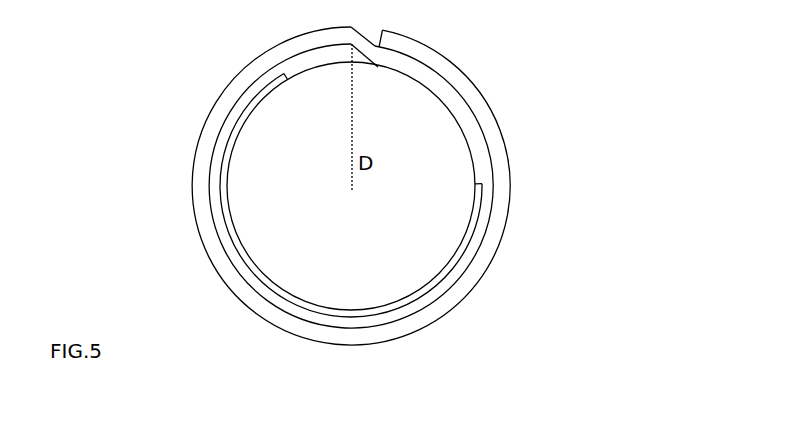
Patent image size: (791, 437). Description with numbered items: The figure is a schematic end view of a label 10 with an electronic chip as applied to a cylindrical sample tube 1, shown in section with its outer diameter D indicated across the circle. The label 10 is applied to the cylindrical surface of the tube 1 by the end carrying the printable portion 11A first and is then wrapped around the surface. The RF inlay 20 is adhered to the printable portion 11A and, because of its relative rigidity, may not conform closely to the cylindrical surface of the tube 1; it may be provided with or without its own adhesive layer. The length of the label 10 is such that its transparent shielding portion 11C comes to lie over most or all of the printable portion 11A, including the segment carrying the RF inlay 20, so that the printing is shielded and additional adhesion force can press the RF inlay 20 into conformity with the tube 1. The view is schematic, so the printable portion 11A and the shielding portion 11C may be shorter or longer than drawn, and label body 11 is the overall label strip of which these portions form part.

The tube 1 is at (435, 168).
The label 10 is at (624, 211).
The outer ring 11 is at (455, 300).
The printable portion 11A is at (278, 315).
The transparent shielding portion 11C is at (460, 85).
The RF inlay 20 is at (222, 195).